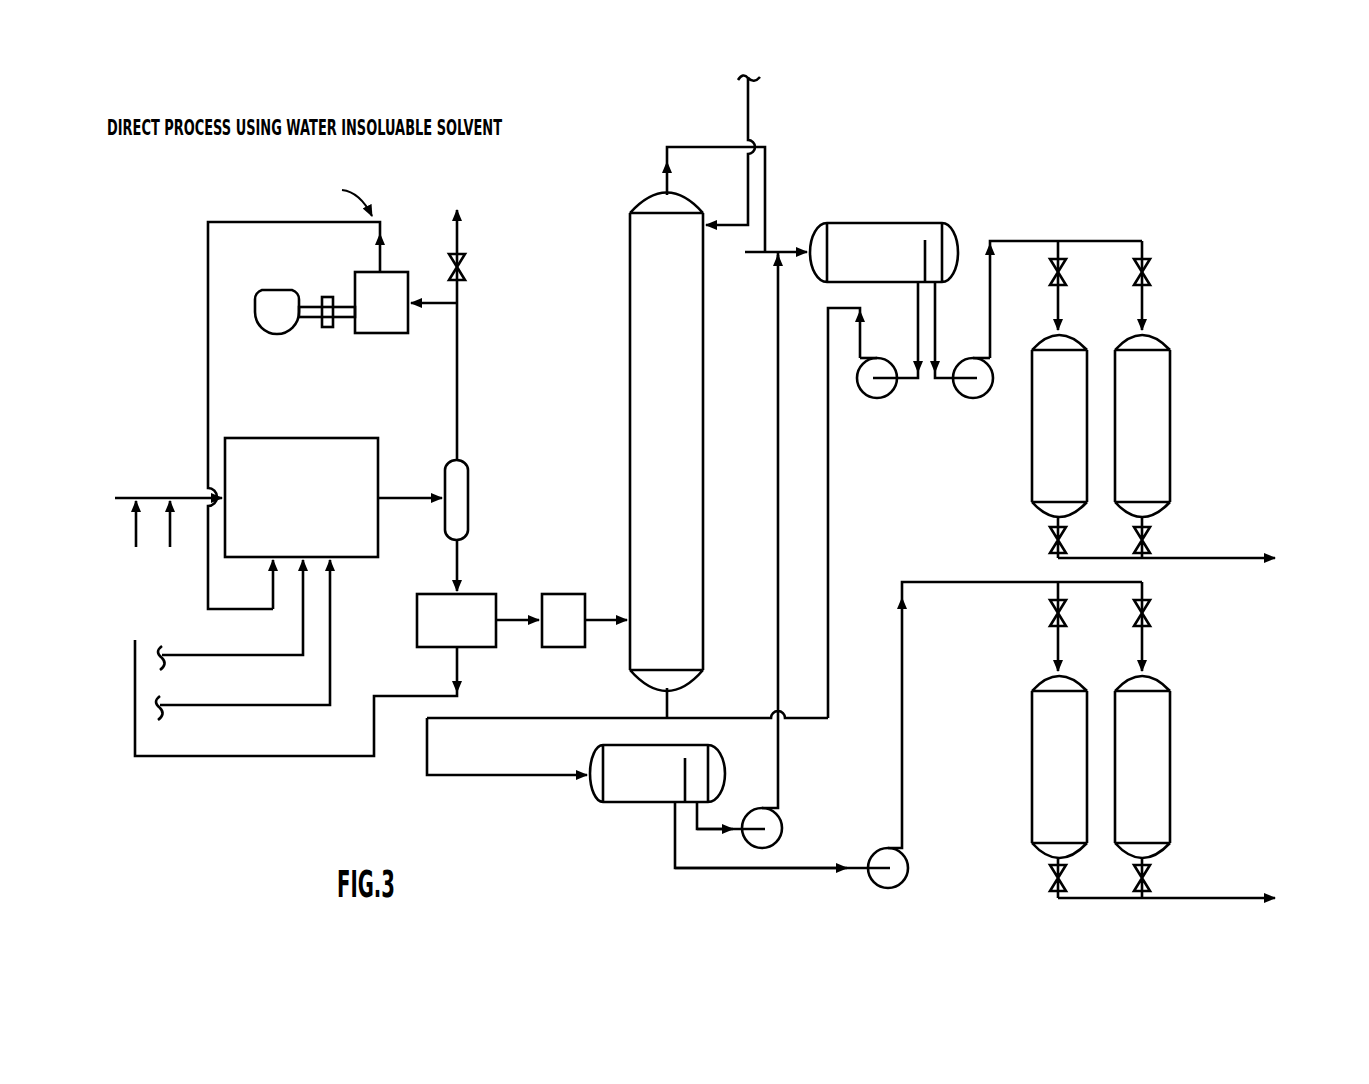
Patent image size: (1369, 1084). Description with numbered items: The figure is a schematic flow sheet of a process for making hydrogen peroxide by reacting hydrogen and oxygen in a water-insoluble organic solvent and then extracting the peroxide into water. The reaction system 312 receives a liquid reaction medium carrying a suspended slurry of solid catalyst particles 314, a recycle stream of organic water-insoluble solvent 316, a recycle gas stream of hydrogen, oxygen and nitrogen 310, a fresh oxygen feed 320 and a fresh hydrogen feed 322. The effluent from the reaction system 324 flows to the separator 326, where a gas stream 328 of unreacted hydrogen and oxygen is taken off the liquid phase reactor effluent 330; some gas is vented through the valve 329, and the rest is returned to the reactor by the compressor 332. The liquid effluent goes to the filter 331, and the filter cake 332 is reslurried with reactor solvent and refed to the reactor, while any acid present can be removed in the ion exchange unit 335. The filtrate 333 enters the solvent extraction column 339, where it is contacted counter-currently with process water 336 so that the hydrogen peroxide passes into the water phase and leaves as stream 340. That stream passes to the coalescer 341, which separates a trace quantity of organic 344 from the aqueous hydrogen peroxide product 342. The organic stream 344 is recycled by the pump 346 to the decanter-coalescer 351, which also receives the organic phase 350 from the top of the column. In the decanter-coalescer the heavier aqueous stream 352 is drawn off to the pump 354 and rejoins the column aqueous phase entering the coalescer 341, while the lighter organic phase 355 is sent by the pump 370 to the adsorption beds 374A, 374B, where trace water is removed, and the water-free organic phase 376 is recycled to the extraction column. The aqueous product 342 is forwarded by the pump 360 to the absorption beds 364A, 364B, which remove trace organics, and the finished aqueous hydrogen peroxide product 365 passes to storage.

The recycle gas stream 310 is at (208, 285).
The reaction system 312 is at (303, 438).
The liquid reaction medium with suspended catalyst particles 314 is at (182, 494).
The recycle stream of organic water-insoluble solvent 316 is at (172, 532).
The fresh oxygen feed 320 is at (303, 640).
The fresh hydrogen feed 322 is at (330, 692).
The effluent from the reaction system 324 is at (393, 497).
The separator 326 is at (470, 482).
The gas stream 328 is at (457, 367).
The valve 329 is at (467, 262).
The liquid phase reactor effluent 330 is at (455, 567).
The filter 331 is at (417, 632).
The compressor / filter cake 332 is at (255, 292).
The filtrate 333 is at (598, 623).
The ion exchange unit 335 is at (563, 648).
The process water 336 is at (748, 120).
The solvent extraction column 339 is at (630, 373).
The aqueous hydrogen peroxide stream 340 is at (670, 705).
The coalescer 341 is at (655, 803).
The aqueous hydrogen peroxide product 342 is at (675, 845).
The trace organic stream 344 is at (726, 830).
The pump 346 is at (752, 809).
The organic phase 350 is at (750, 252).
The decanter-coalescer 351 is at (885, 222).
The heavier aqueous stream 352 is at (916, 332).
The pump 354 is at (890, 398).
The lighter organic phase 355 is at (937, 332).
The pump 360 is at (890, 888).
The absorption bed 364A is at (1028, 735).
The absorption bed 364B is at (1172, 720).
The aqueous hydrogen peroxide product 365 is at (1195, 898).
The pump 370 is at (986, 398).
The adsorption bed 374A is at (1028, 487).
The adsorption bed 374B is at (1172, 465).
The water-free organic phase 376 is at (1220, 557).